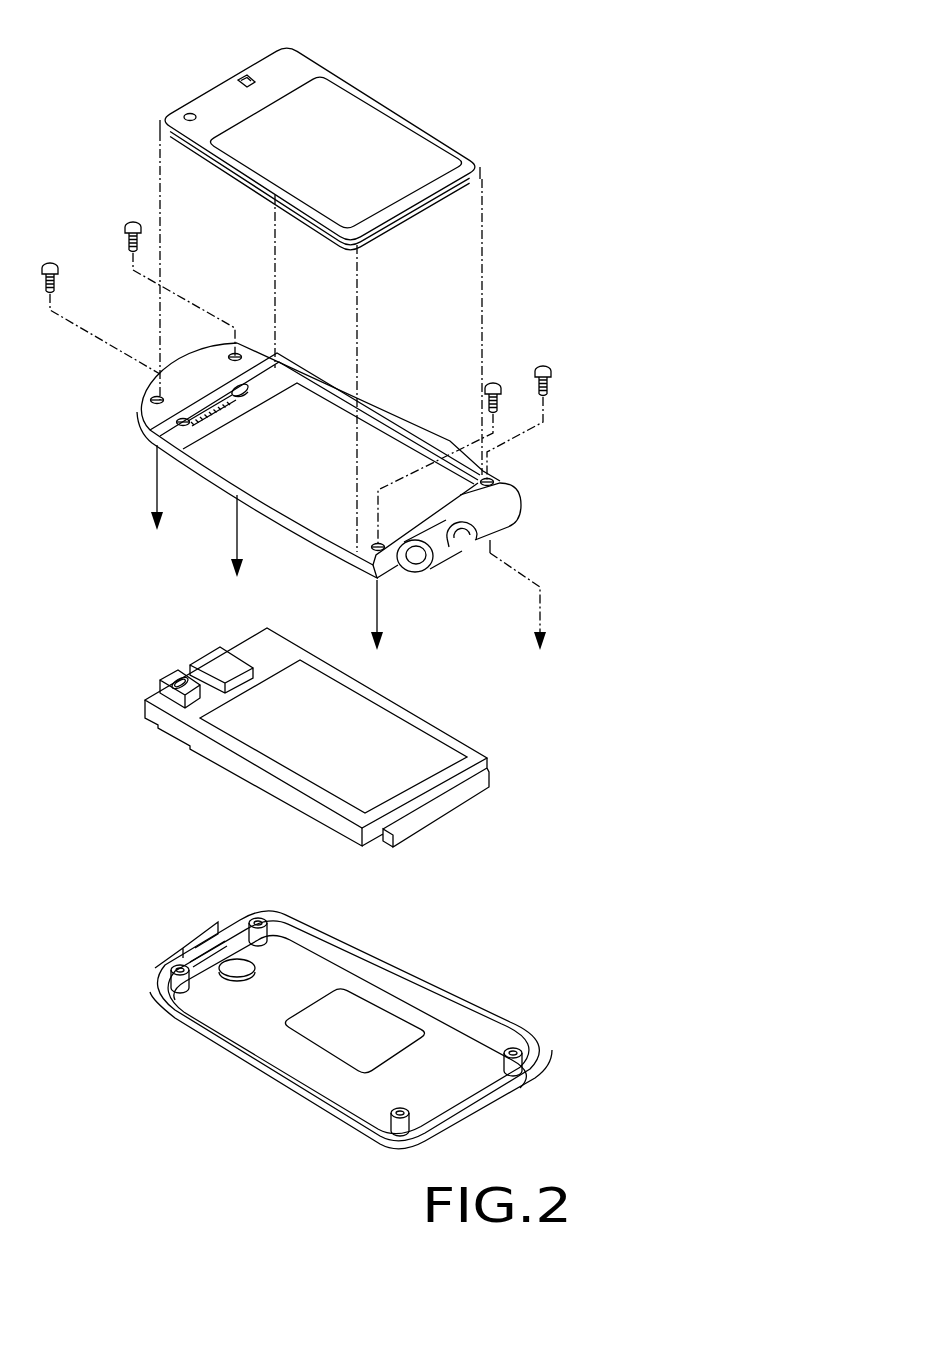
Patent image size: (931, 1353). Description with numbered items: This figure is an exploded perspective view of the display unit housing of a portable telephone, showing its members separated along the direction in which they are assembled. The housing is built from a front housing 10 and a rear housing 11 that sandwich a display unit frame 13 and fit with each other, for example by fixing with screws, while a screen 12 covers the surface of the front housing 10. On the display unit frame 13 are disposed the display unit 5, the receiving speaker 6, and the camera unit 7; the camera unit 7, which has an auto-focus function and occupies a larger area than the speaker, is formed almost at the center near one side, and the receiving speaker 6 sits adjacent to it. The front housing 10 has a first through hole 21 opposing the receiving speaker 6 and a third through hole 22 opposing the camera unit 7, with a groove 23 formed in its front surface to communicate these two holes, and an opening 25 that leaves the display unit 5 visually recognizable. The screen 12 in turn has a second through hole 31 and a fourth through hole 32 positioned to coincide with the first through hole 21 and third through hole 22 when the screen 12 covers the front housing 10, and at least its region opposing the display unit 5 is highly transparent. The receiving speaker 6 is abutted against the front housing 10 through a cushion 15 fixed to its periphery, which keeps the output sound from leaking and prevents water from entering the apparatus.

The display unit 5 is at (417, 740).
The receiving speaker 6 is at (153, 667).
The camera unit 7 is at (207, 658).
The front housing 10 is at (293, 446).
The rear housing 11 is at (163, 952).
The screen 12 is at (320, 129).
The display unit frame 13 is at (298, 717).
The cushion 15 is at (175, 677).
The first through hole 21 is at (178, 419).
The third through hole 22 is at (249, 386).
The groove 23 is at (207, 412).
The opening 25 is at (388, 447).
The second through hole 31 is at (189, 112).
The fourth through hole 32 is at (245, 76).